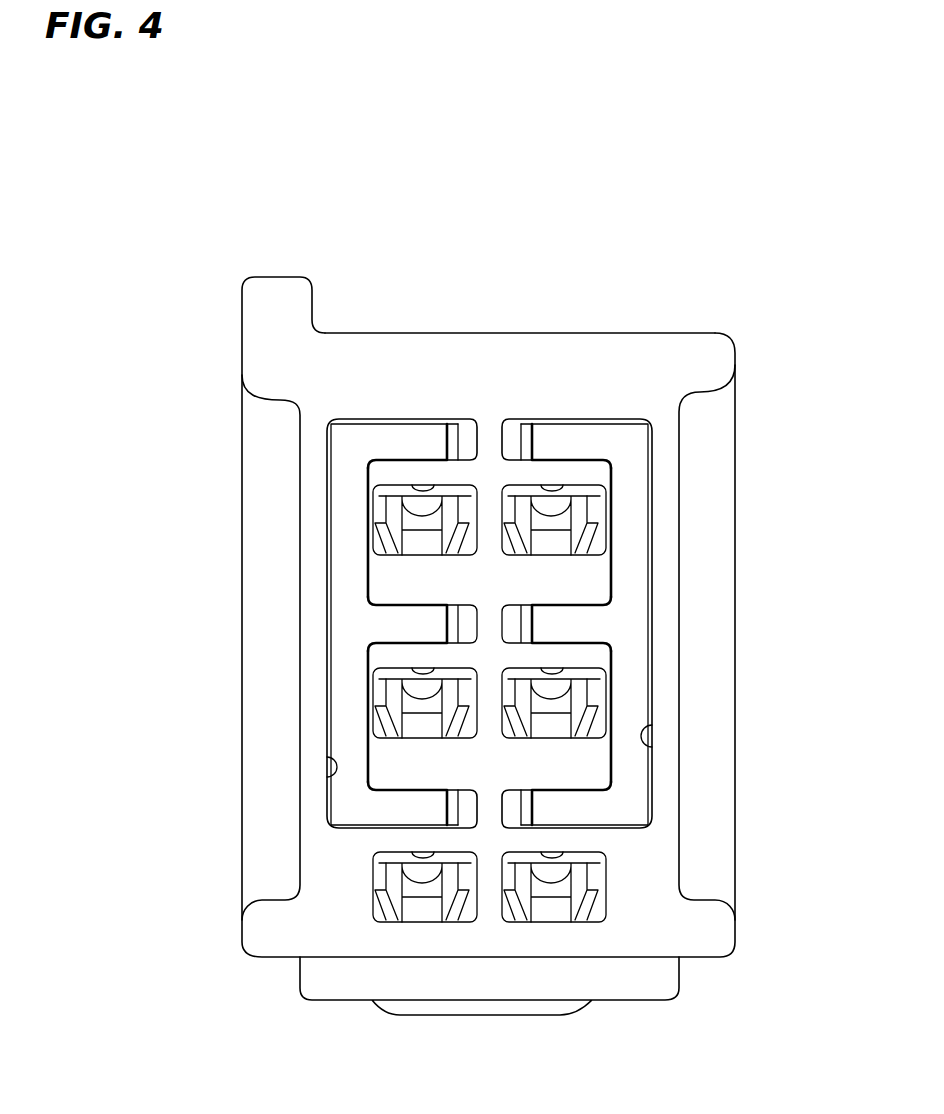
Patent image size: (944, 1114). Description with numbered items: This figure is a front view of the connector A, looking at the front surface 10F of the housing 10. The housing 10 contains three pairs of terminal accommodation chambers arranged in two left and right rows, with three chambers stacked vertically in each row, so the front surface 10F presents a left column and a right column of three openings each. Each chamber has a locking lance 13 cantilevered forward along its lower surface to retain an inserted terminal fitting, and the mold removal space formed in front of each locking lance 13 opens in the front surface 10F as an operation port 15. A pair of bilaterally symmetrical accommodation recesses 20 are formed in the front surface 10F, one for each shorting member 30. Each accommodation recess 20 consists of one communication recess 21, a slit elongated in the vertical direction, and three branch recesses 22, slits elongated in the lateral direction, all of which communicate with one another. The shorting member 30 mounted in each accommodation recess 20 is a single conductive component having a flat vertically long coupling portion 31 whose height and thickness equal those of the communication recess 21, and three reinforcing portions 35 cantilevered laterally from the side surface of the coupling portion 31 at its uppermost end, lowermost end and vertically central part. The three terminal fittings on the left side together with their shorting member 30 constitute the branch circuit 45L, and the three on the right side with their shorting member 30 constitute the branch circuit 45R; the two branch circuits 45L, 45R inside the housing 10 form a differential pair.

The housing 10 is at (712, 357).
The front surface 10F is at (532, 360).
The locking lance 13 is at (422, 521).
The operation port 15 is at (418, 550).
The accommodation recess 20 is at (333, 436).
The communication recess 21 is at (330, 778).
The branch recess 22 is at (504, 447).
The shorting member 30 is at (352, 442).
The coupling portion 31 is at (347, 567).
The reinforcing portion 35 is at (402, 440).
The branch circuit 45L is at (313, 472).
The branch circuit 45R is at (658, 439).
The connector A is at (791, 206).